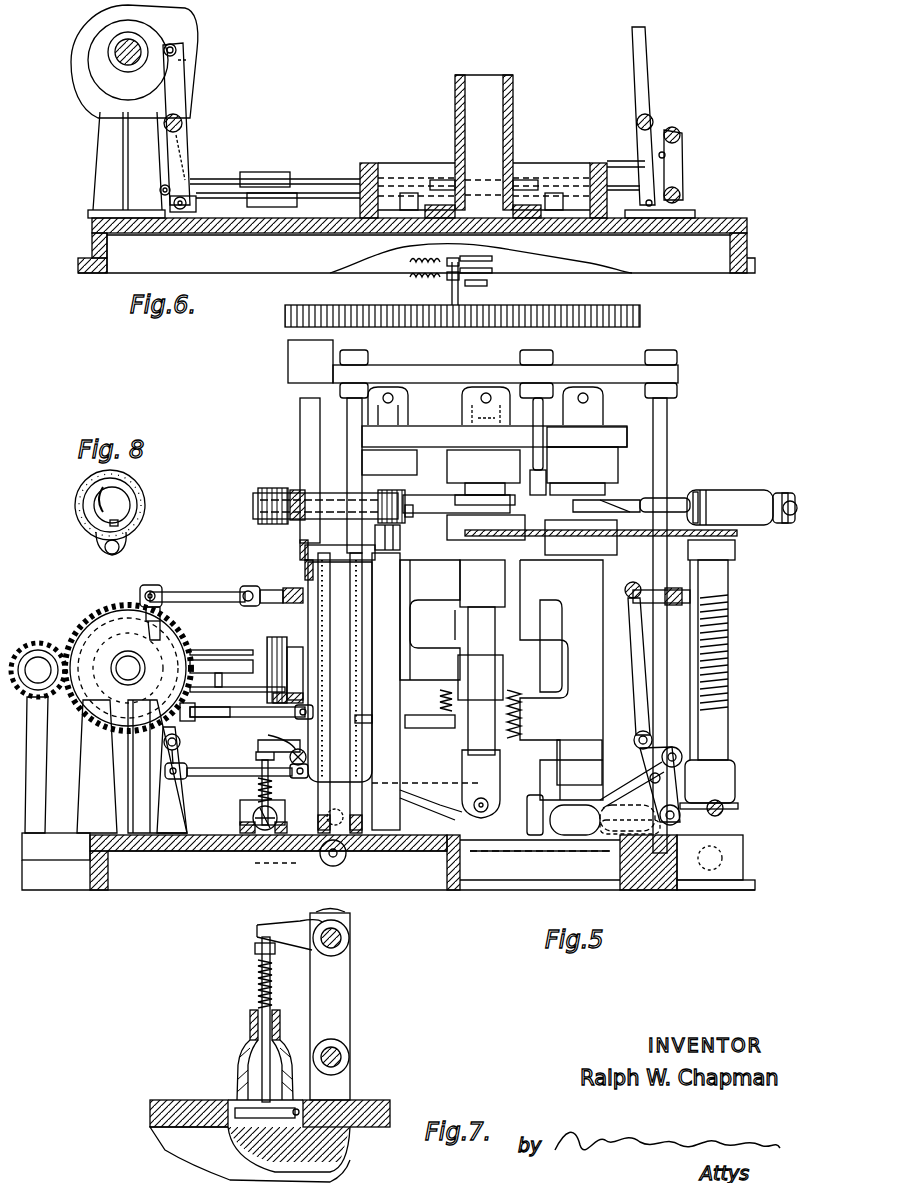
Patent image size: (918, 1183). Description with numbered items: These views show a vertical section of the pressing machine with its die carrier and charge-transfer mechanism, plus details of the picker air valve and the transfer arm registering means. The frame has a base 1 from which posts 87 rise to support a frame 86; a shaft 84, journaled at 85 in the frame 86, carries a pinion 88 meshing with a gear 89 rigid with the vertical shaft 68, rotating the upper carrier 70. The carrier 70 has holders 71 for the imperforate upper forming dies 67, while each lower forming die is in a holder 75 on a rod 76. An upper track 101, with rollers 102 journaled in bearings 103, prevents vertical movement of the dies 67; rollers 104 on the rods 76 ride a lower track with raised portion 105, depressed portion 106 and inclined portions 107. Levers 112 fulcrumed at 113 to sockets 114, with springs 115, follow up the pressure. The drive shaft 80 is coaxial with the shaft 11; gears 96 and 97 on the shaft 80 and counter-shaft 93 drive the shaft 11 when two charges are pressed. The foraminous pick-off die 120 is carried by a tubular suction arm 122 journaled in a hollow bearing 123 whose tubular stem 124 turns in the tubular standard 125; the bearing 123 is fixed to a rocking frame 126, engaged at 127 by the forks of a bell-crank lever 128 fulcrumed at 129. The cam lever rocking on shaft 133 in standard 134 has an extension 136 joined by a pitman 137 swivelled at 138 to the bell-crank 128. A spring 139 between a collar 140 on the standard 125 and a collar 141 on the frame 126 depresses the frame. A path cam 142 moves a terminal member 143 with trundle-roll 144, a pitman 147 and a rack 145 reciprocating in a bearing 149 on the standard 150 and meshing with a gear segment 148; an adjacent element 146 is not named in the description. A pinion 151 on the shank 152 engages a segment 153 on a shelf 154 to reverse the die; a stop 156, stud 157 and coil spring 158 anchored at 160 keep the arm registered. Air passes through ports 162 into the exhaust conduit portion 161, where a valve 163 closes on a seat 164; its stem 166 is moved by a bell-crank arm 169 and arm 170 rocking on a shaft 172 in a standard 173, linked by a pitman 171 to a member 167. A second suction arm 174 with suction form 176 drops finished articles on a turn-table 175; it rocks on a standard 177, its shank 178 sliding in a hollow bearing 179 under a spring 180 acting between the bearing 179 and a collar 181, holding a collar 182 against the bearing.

In FIG. 5, the base 1 is at (160, 878).
In FIG. 5, the shaft 11 is at (90, 700).
In FIG. 5, the upper forming die 67 is at (485, 483).
In FIG. 5, the vertical shaft 68 is at (480, 510).
In FIG. 5, the upper carrier 70 is at (603, 435).
In FIG. 5, the holders 71 is at (618, 467).
In FIG. 5, the holder 75 is at (540, 548).
In FIG. 5, the rod 76 is at (468, 740).
In FIG. 6, the shaft 80 is at (118, 60).
In FIG. 5, the shaft 84 is at (305, 403).
In FIG. 5, the bearing 85 is at (300, 360).
In FIG. 5, the frame 86 is at (392, 374).
In FIG. 5, the posts 87 is at (362, 437).
In FIG. 5, the pinion 88 is at (345, 300).
In FIG. 5, the gear 89 is at (398, 298).
In FIG. 5, the counter-shaft 93 is at (33, 660).
In FIG. 5, the gear 96 is at (120, 605).
In FIG. 5, the gear 97 is at (40, 648).
In FIG. 5, the upper track 101 is at (455, 415).
In FIG. 5, the rollers 102 is at (510, 388).
In FIG. 5, the bearings 103 is at (493, 410).
In FIG. 5, the rollers 104 is at (470, 810).
In FIG. 5, the raised portion 105 is at (420, 782).
In FIG. 5, the depressed portion 106 is at (520, 826).
In FIG. 5, the inclined portions 107 is at (465, 805).
In FIG. 5, the levers 112 is at (440, 728).
In FIG. 5, the fulcrum 113 is at (557, 756).
In FIG. 5, the sockets 114 is at (560, 778).
In FIG. 5, the springs 115 is at (458, 690).
In FIG. 5, the pick-off die 120 is at (530, 505).
In FIG. 5, the suction arm 122 is at (430, 500).
In FIG. 8, the hollow bearing 123 is at (95, 536).
In FIG. 5, the hollow bearing 123 is at (283, 490).
In FIG. 5, the tubular stem 124 is at (310, 545).
In FIG. 5, the tubular standard 125 is at (340, 655).
In FIG. 5, the rocking frame 126 is at (310, 553).
In FIG. 5, the engagement point 127 is at (360, 818).
In FIG. 5, the bell-crank lever 128 is at (300, 860).
In FIG. 5, the fulcrum shaft 129 is at (255, 850).
In FIG. 7, the fulcrum shaft 129 is at (348, 1055).
In FIG. 5, the shaft 133 is at (180, 742).
In FIG. 5, the standard 134 is at (215, 790).
In FIG. 5, the extension 136 is at (165, 770).
In FIG. 5, the pitman 137 is at (240, 768).
In FIG. 5, the swivel point 138 is at (292, 752).
In FIG. 5, the spring 139 is at (357, 662).
In FIG. 5, the collar 140 is at (368, 580).
In FIG. 5, the collar 141 is at (372, 718).
In FIG. 5, the path cam 142 is at (82, 625).
In FIG. 5, the terminal member 143 is at (162, 610).
In FIG. 5, the trundle-roll 144 is at (192, 640).
In FIG. 5, the rack 145 is at (272, 605).
In FIG. 5, the bevel gear 146 is at (285, 670).
In FIG. 5, the pitman 147 is at (195, 592).
In FIG. 5, the gear segment 148 is at (295, 605).
In FIG. 5, the bearing 149 is at (305, 568).
In FIG. 5, the standard 150 is at (445, 668).
In FIG. 5, the pinion 151 is at (392, 460).
In FIG. 8, the shank 152 is at (108, 499).
In FIG. 5, the shank 152 is at (365, 492).
In FIG. 5, the segment 153 is at (410, 517).
In FIG. 5, the shelf 154 is at (400, 545).
In FIG. 8, the stop 156 is at (122, 490).
In FIG. 8, the stud 157 is at (118, 524).
In FIG. 8, the coil spring 158 is at (92, 518).
In FIG. 8, the spring anchorage 160 is at (120, 547).
In FIG. 5, the exhaust conduit portion 161 is at (332, 866).
In FIG. 5, the air ports 162 is at (262, 490).
In FIG. 5, the valve 163 is at (240, 825).
In FIG. 7, the valve 163 is at (280, 1118).
In FIG. 7, the seat 164 is at (300, 1115).
In FIG. 5, the valve stem 166 is at (260, 805).
In FIG. 7, the valve stem 166 is at (258, 996).
In FIG. 5, the member 167 is at (210, 707).
In FIG. 5, the bell-crank arm 169 is at (260, 765).
In FIG. 7, the bell-crank arm 169 is at (300, 922).
In FIG. 5, the arm 170 is at (300, 756).
In FIG. 7, the arm 170 is at (340, 915).
In FIG. 5, the pitman 171 is at (232, 718).
In FIG. 7, the shaft 172 is at (345, 935).
In FIG. 7, the standard 173 is at (330, 1020).
In FIG. 5, the suction arm 174 is at (665, 500).
In FIG. 5, the turn-table 175 is at (643, 536).
In FIG. 5, the suction form 176 is at (605, 505).
In FIG. 5, the standard 177 is at (722, 670).
In FIG. 5, the shank portion 178 is at (720, 490).
In FIG. 5, the hollow bearing 179 is at (775, 485).
In FIG. 5, the spring 180 is at (786, 524).
In FIG. 5, the collar 181 is at (783, 565).
In FIG. 5, the collar 182 is at (700, 508).